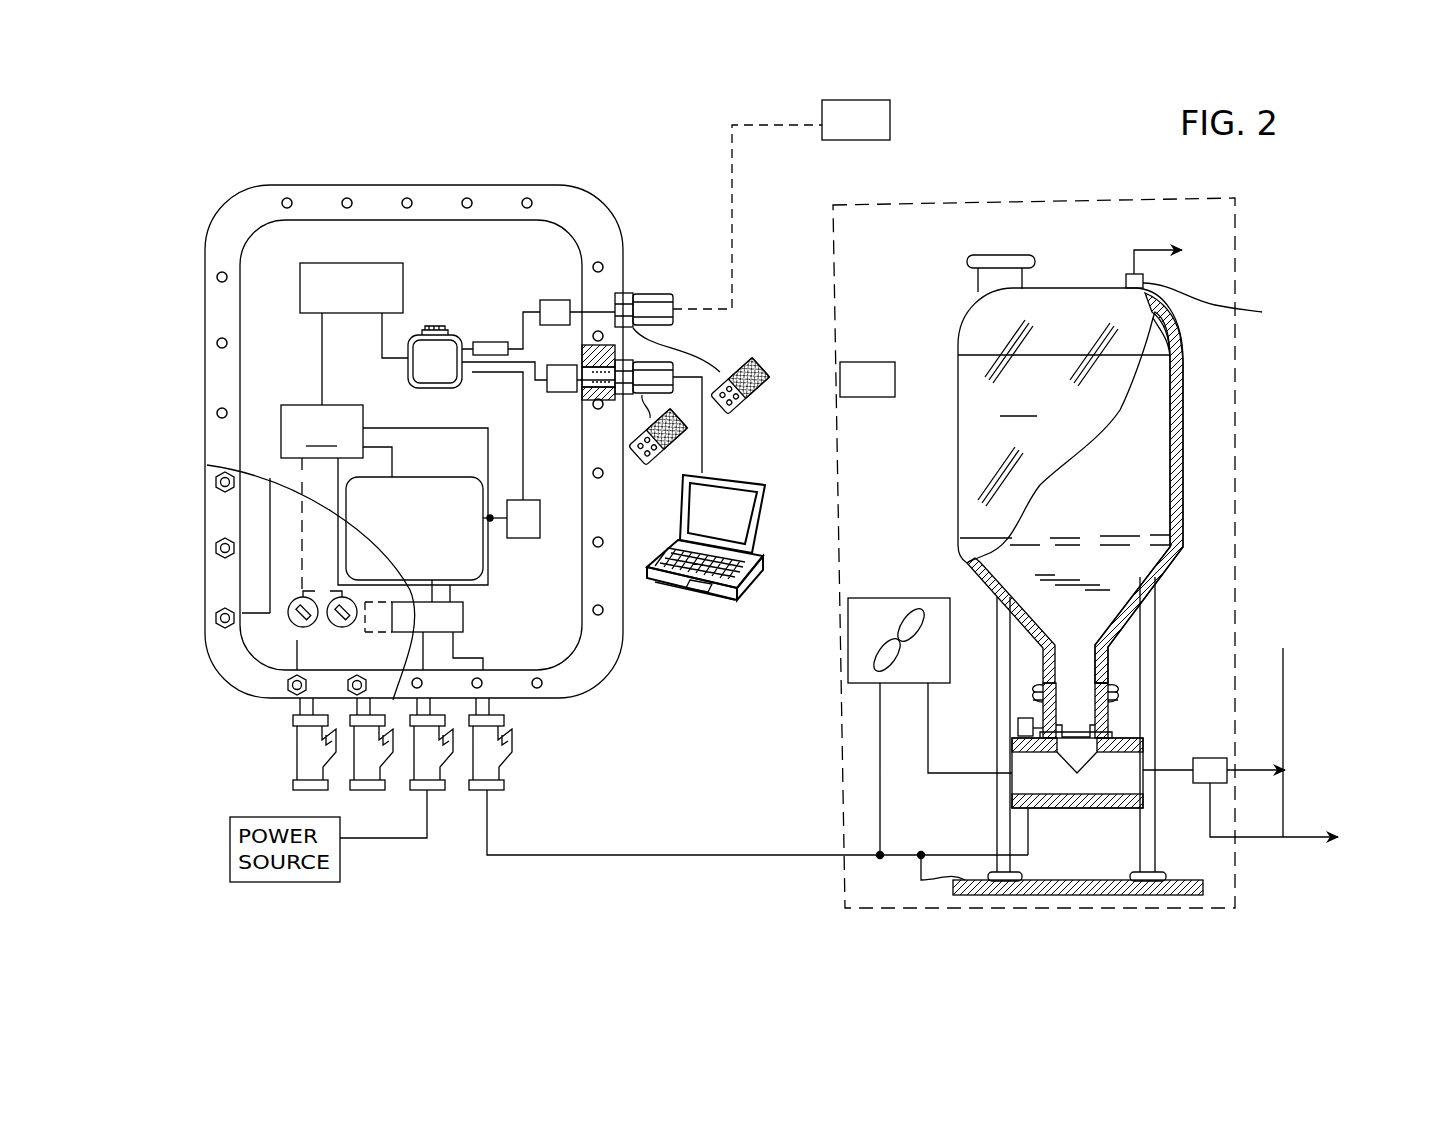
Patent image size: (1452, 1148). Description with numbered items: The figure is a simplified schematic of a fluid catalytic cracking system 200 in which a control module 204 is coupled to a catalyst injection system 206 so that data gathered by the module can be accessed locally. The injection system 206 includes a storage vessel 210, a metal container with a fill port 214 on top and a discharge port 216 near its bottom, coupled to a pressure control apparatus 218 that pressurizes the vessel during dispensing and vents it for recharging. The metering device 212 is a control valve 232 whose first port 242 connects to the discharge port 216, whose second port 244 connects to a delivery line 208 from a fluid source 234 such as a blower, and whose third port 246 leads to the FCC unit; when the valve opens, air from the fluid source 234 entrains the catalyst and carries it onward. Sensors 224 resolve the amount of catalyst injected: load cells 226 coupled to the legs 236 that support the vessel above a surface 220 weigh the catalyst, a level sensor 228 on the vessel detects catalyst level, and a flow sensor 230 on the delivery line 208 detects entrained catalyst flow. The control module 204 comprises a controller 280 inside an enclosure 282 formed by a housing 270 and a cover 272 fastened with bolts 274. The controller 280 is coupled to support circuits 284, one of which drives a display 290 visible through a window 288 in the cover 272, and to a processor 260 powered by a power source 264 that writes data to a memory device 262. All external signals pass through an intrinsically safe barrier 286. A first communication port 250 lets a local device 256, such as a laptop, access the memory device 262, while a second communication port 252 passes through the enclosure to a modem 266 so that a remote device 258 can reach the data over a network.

The fluid catalytic cracking system 200 is at (377, 140).
The enclosure 282 is at (456, 185).
The housing 270 is at (218, 262).
The cover 272 is at (218, 510).
The bolts 274 is at (218, 550).
The control module 204 is at (198, 437).
The controller 280 is at (403, 265).
The processor 260 is at (477, 406).
The memory device 262 is at (436, 325).
The modem 266 is at (490, 340).
The intrinsically safe barrier 286 is at (548, 299).
The support circuits 284 is at (317, 537).
The display 290 is at (405, 477).
The window 288 is at (352, 548).
The power source 264 is at (535, 538).
The second communication port 252 is at (629, 290).
The remote device 258 is at (856, 120).
The first communication port 250 is at (682, 360).
The local device 256 is at (720, 470).
The catalyst injection system 206 is at (1087, 190).
The pressure control apparatus 218 is at (848, 392).
The storage vessel 210 is at (1070, 485).
The fill port 214 is at (998, 254).
The sensor 224 is at (1123, 268).
The level sensor 228 is at (1223, 306).
The discharge port 216 is at (1130, 655).
The first port 242 is at (1135, 706).
The metering device 212 is at (1124, 705).
The second port 244 is at (1030, 808).
The third port 246 is at (1110, 727).
The control valve 232 is at (1084, 812).
The legs 236 is at (1158, 612).
The delivery line 208 is at (1172, 800).
The load cells 226 is at (1015, 880).
The surface 220 is at (955, 878).
The fluid source 234 is at (882, 597).
The flow sensor 230 is at (1210, 758).